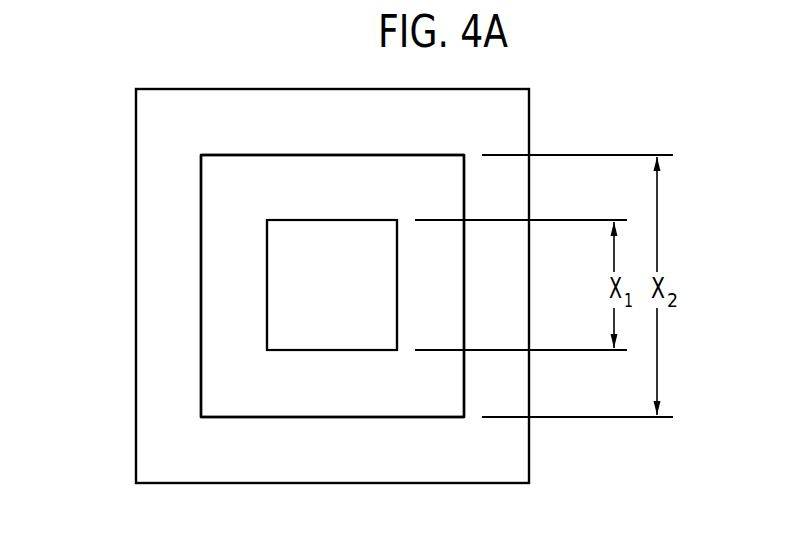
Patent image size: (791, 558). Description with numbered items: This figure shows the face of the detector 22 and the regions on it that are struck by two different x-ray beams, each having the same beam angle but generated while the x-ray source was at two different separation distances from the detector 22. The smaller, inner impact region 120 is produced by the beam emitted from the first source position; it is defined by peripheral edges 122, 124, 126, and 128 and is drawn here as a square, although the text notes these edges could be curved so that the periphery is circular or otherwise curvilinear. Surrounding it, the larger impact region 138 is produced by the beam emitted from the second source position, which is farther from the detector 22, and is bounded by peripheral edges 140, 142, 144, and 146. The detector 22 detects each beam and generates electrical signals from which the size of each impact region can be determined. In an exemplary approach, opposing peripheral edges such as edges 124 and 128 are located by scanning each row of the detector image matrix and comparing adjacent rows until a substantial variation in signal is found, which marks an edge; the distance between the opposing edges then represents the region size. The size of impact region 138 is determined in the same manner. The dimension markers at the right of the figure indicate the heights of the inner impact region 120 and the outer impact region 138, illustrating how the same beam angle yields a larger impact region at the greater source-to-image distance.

The detector 22 is at (136, 186).
The impact region 120 is at (283, 323).
The peripheral edge 122 is at (267, 287).
The peripheral edge 124 is at (331, 219).
The peripheral edge 126 is at (400, 283).
The peripheral edge 128 is at (334, 350).
The impact region 138 is at (238, 180).
The peripheral edge 140 is at (200, 288).
The peripheral edge 142 is at (335, 154).
The peripheral edge 144 is at (465, 283).
The peripheral edge 146 is at (334, 417).